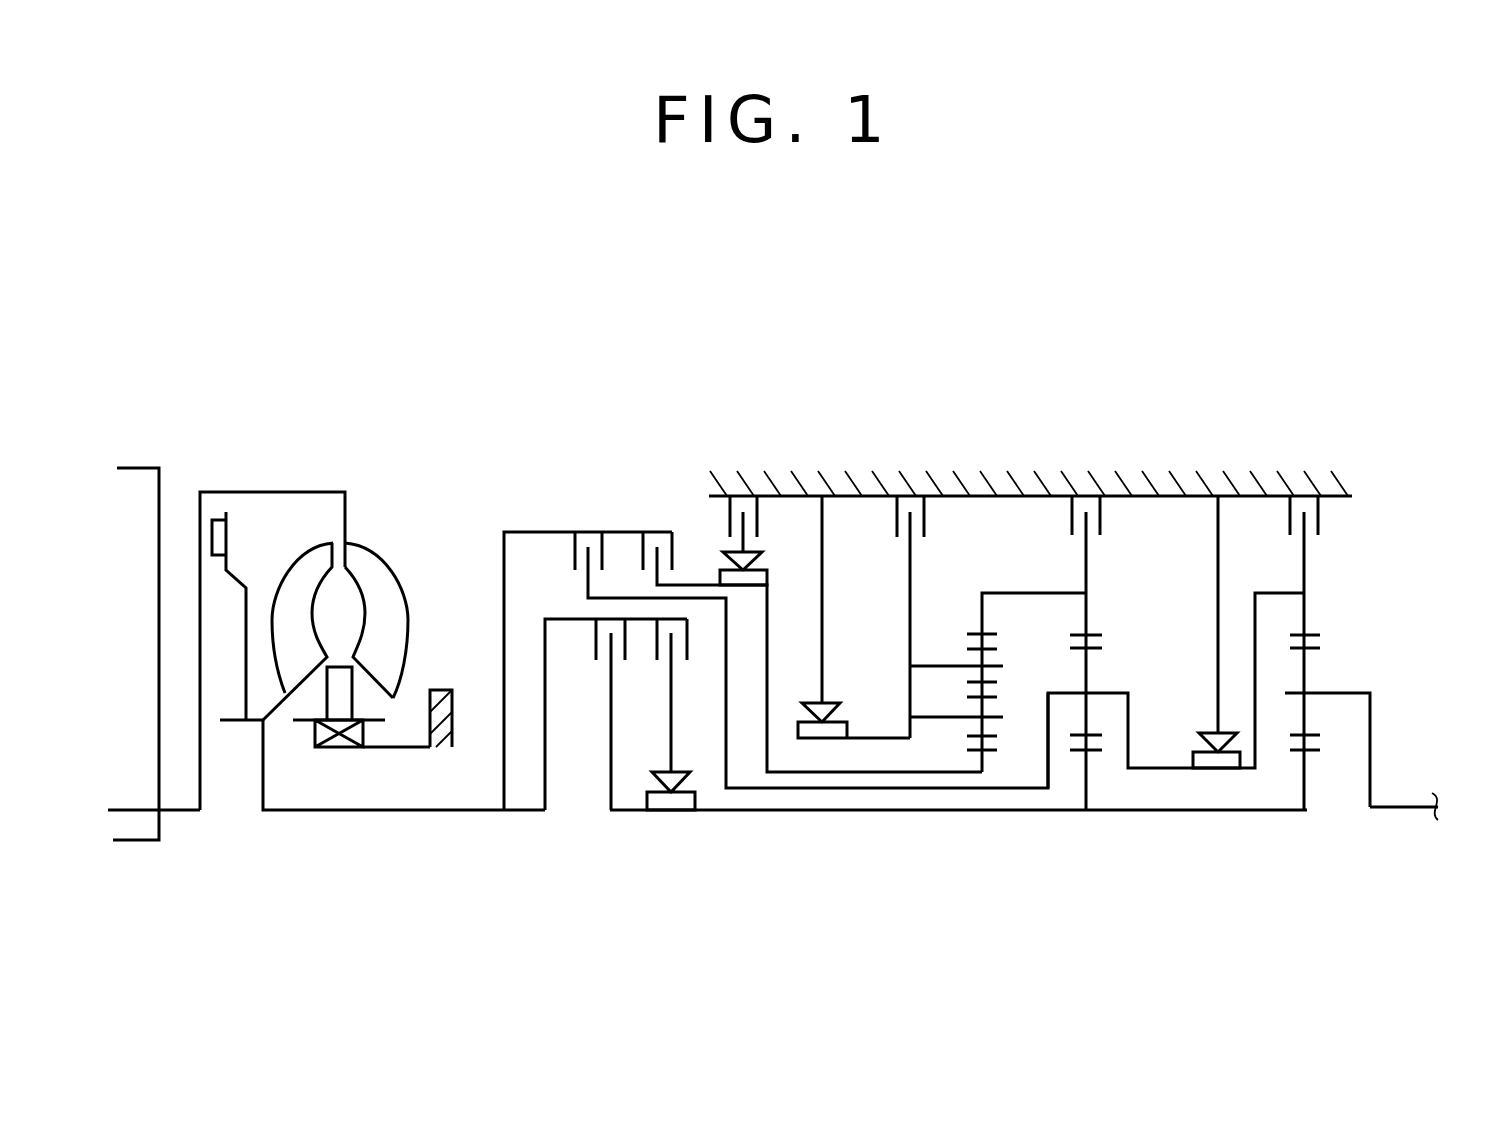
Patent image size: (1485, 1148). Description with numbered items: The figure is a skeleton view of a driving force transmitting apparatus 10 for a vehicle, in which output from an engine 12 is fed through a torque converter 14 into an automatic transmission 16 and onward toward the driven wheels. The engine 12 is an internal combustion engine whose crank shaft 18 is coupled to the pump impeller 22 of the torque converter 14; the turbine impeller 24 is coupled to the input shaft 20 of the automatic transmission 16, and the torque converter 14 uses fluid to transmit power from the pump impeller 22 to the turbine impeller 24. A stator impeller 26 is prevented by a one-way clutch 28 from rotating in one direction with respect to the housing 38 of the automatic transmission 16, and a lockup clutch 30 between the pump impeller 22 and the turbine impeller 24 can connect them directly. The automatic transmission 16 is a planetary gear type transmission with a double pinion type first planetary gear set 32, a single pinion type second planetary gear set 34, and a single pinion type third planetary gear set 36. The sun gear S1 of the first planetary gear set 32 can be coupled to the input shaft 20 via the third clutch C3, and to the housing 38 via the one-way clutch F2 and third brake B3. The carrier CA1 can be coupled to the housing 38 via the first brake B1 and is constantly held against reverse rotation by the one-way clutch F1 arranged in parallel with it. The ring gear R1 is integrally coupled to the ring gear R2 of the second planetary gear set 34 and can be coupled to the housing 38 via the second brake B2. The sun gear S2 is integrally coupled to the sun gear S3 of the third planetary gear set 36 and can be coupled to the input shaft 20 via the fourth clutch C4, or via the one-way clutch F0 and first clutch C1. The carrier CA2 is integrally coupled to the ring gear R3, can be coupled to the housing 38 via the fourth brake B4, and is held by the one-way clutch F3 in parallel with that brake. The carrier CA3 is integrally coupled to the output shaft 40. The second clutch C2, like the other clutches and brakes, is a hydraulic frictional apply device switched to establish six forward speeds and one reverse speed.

The driving force transmitting apparatus 10 is at (478, 313).
The engine 12 is at (132, 477).
The torque converter 14 is at (348, 468).
The automatic transmission 16 is at (1192, 420).
The crank shaft 18 is at (185, 812).
The input shaft 20 is at (380, 812).
The pump impeller 22 is at (372, 568).
The turbine impeller 24 is at (308, 577).
The stator impeller 26 is at (343, 687).
The one-way clutch 28 is at (338, 740).
The lockup clutch 30 is at (215, 543).
The first planetary gear set 32 is at (977, 782).
The second planetary gear set 34 is at (1083, 813).
The third planetary gear set 36 is at (1293, 825).
The housing 38 is at (440, 692).
The output shaft 40 is at (1400, 808).
The first clutch C1 is at (688, 695).
The second clutch C2 is at (806, 641).
The third clutch C3 is at (809, 633).
The fourth clutch C4 is at (592, 714).
The first brake B1 is at (910, 486).
The second brake B2 is at (1081, 485).
The third brake B3 is at (745, 486).
The fourth brake B4 is at (1299, 485).
The one-way clutch F0 is at (670, 813).
The one-way clutch F1 is at (843, 617).
The one-way clutch F2 is at (764, 548).
The one-way clutch F3 is at (1207, 632).
The sun gear S1 is at (988, 752).
The sun gear S2 is at (1092, 752).
The sun gear S3 is at (1312, 752).
The ring gear R1 is at (973, 627).
The ring gear R2 is at (1092, 633).
The ring gear R3 is at (1312, 633).
The carrier CA1 is at (910, 683).
The carrier CA2 is at (1103, 690).
The carrier CA3 is at (1330, 690).